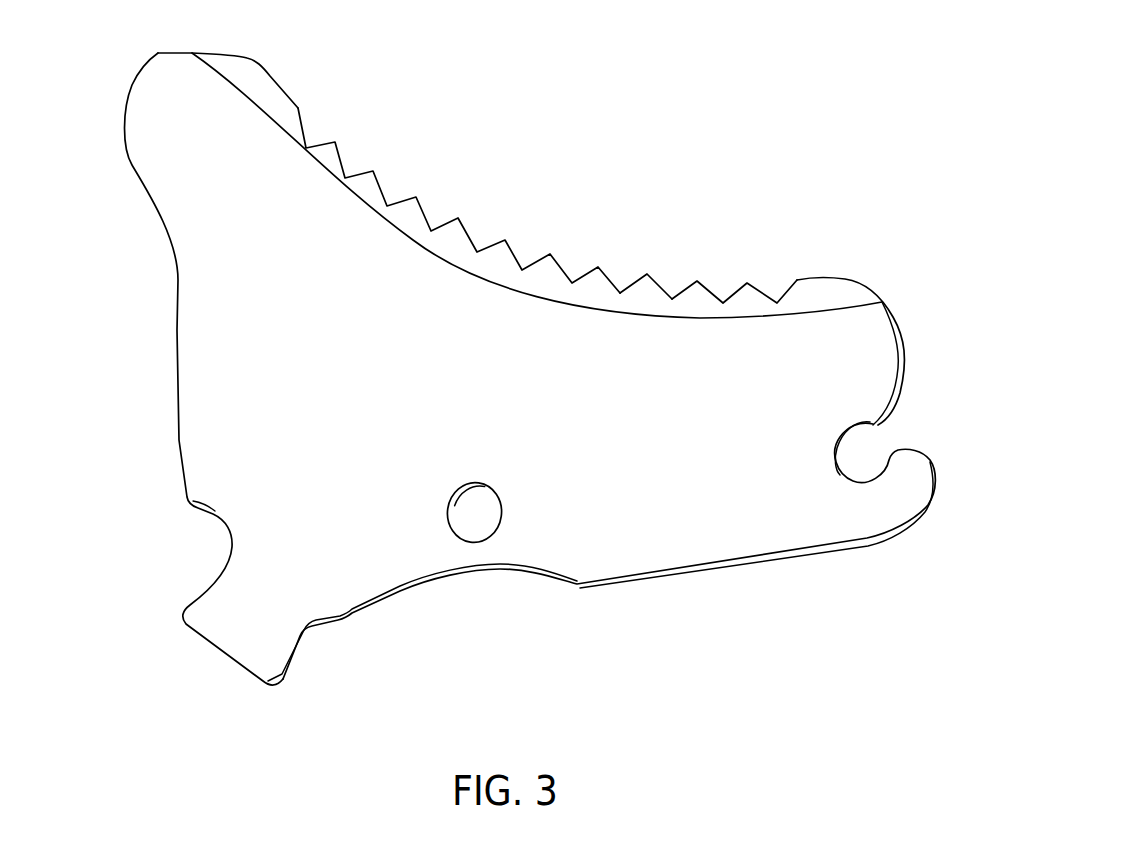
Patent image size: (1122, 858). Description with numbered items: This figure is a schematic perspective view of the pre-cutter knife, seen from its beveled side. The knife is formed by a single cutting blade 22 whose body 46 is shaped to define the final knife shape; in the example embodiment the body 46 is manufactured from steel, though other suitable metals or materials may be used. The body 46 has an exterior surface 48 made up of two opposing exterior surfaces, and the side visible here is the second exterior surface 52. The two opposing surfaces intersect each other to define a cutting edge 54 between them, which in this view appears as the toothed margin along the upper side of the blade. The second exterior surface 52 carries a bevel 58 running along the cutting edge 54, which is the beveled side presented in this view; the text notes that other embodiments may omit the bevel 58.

The cutting blade 22 is at (497, 342).
The body 46 is at (237, 370).
The exterior surface 48 is at (365, 378).
The second exterior surface 52 is at (660, 495).
The cutting edge 54 is at (547, 205).
The bevel 58 is at (643, 297).